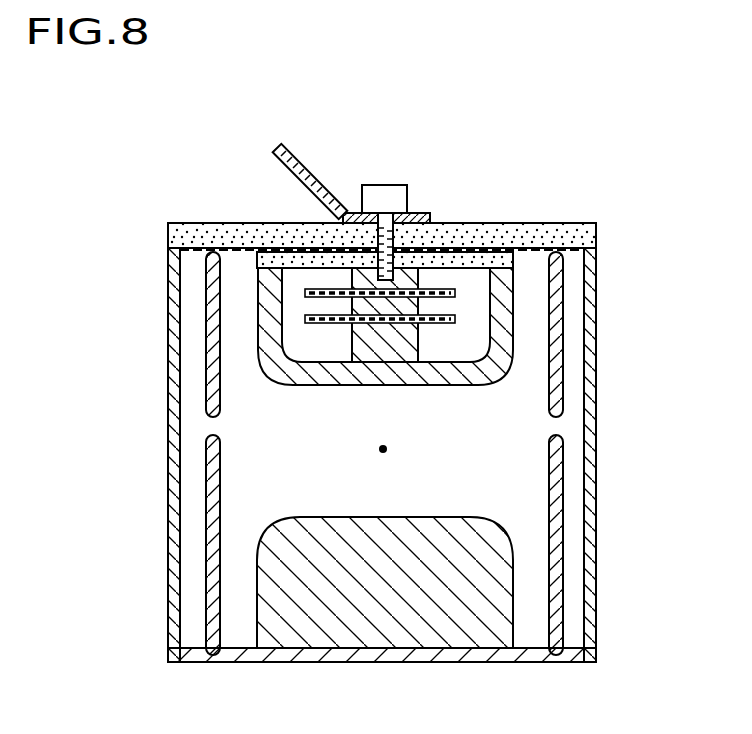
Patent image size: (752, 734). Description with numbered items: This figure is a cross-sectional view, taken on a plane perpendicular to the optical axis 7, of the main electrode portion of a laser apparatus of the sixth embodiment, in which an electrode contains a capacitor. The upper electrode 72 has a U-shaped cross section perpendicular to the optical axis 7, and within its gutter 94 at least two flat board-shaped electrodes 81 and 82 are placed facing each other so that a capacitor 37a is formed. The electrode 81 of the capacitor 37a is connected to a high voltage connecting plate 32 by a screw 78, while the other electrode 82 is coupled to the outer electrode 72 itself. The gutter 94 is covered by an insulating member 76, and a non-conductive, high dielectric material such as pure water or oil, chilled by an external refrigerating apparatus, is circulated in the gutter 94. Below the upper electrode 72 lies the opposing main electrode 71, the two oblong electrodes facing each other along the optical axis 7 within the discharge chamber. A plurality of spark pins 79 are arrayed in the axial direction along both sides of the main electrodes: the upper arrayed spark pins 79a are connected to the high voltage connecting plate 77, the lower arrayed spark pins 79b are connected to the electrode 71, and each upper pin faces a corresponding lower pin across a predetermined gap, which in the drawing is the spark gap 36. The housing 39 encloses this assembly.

The optical axis 7 is at (378, 449).
The high voltage connecting plate 32 is at (317, 198).
The spark gap 36 is at (217, 426).
The capacitor 37a is at (433, 307).
The housing 39 is at (592, 545).
The electrode 71 is at (470, 625).
The upper electrode 72 is at (263, 330).
The insulating member 76 is at (447, 257).
The high voltage connecting plate 77 is at (530, 248).
The screw 78 is at (385, 185).
The spark pins 79 is at (560, 492).
The upper arrayed spark pin 79a is at (214, 368).
The lower arrayed spark pin 79b is at (214, 492).
The flat board-shaped electrode 81 is at (311, 291).
The flat board-shaped electrode 82 is at (301, 284).
The gutter 94 is at (460, 319).